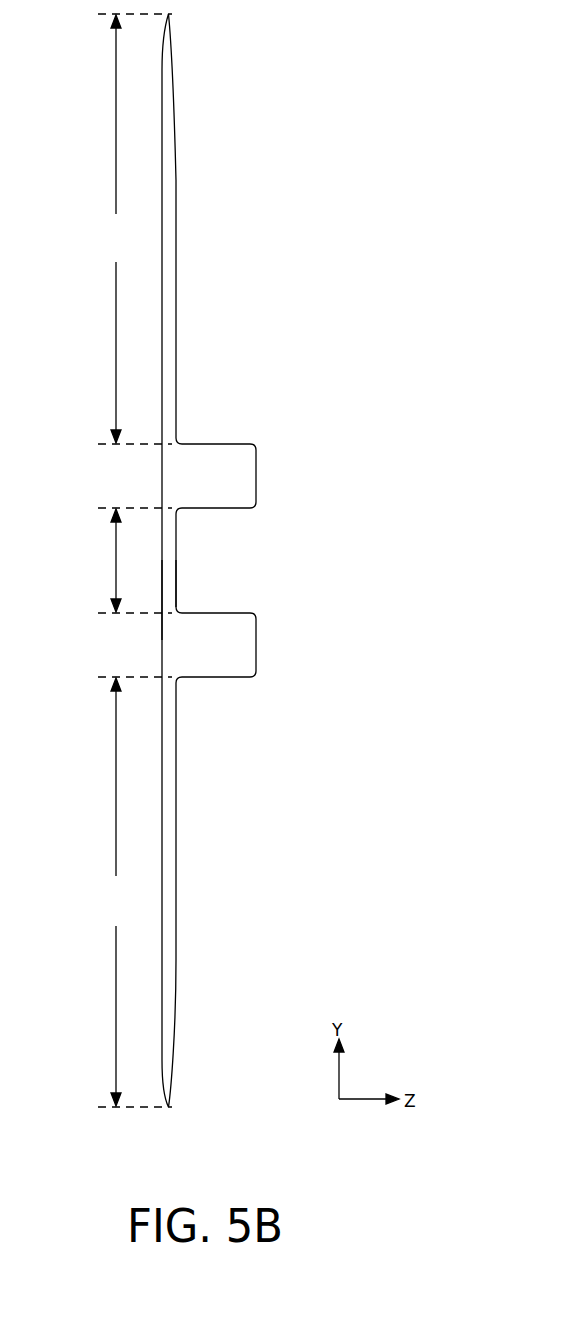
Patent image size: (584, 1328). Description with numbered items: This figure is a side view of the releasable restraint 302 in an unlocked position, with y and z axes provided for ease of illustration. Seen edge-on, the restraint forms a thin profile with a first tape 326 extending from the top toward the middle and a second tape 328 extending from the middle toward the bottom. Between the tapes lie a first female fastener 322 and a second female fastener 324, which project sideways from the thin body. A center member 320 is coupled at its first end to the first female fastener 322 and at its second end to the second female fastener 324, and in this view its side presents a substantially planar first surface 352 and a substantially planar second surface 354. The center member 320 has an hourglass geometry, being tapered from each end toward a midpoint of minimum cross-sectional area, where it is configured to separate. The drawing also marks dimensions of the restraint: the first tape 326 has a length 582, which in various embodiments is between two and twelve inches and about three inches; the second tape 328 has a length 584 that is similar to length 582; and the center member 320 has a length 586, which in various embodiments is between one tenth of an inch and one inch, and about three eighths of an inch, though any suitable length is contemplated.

The releasable restraint 302 is at (201, 560).
The center member 320 is at (177, 533).
The first female fastener 322 is at (256, 468).
The second female fastener 324 is at (256, 648).
The first tape 326 is at (176, 228).
The second tape 328 is at (176, 990).
The first surface 352 is at (177, 577).
The second surface 354 is at (163, 597).
The length 582 is at (115, 229).
The length 584 is at (115, 892).
The length 586 is at (112, 569).